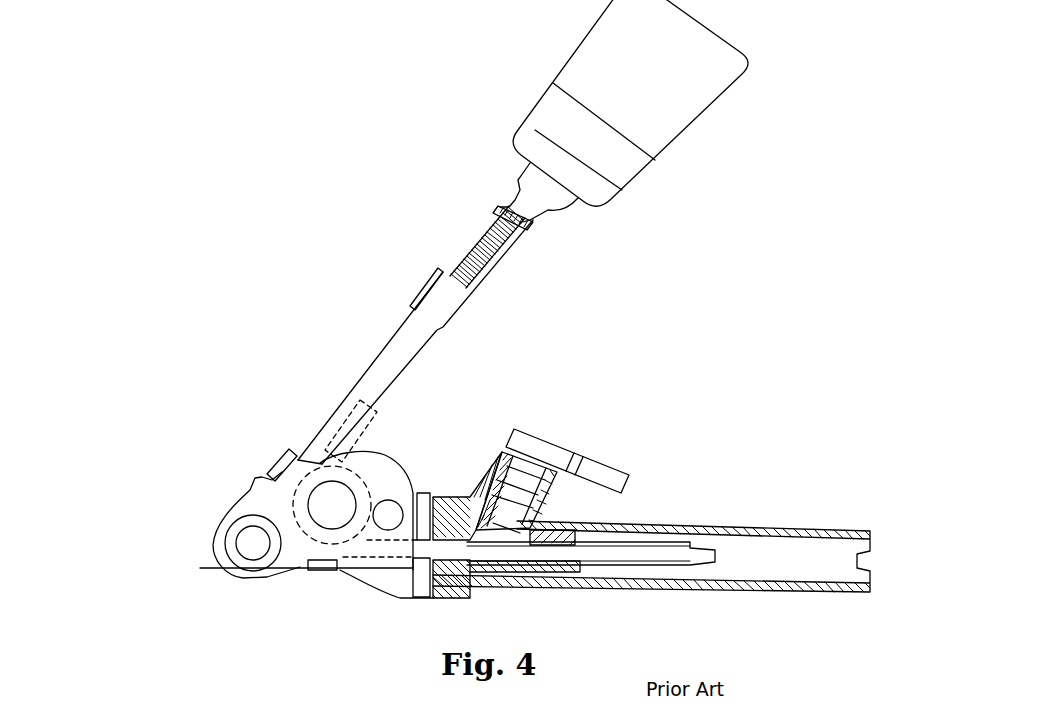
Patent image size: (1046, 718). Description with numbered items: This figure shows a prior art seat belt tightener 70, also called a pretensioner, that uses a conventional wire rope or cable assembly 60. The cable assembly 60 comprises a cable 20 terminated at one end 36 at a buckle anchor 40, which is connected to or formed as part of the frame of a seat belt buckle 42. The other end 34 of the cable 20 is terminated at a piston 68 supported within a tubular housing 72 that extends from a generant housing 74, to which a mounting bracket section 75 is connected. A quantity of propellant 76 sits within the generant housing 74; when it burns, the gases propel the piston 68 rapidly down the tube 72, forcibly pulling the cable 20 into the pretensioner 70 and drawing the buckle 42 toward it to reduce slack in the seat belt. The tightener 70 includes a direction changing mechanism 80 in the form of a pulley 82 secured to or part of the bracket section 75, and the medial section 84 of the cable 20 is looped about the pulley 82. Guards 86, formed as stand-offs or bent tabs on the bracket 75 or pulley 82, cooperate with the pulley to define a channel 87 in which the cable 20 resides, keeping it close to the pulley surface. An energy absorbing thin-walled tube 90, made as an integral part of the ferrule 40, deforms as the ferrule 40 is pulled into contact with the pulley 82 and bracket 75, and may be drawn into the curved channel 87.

The cable 20 is at (392, 363).
The other end of the cable 34 is at (668, 550).
The one end of the cable 36 is at (500, 270).
The buckle anchor 40 is at (530, 252).
The seat belt buckle 42 is at (717, 93).
The cable assembly 60 is at (396, 340).
The piston 68 is at (556, 575).
The seat belt tightener 70 is at (350, 317).
The tubular housing 72 is at (746, 513).
The generant housing 74 is at (500, 463).
The bracket section 75 is at (345, 460).
The propellant 76 is at (512, 452).
The direction changing mechanism 80 is at (268, 503).
The pulley 82 is at (357, 480).
The medial section of the cable 84 is at (300, 427).
The guard 86 is at (273, 463).
The channel 87 is at (275, 497).
The thin-walled tube 90 is at (430, 287).